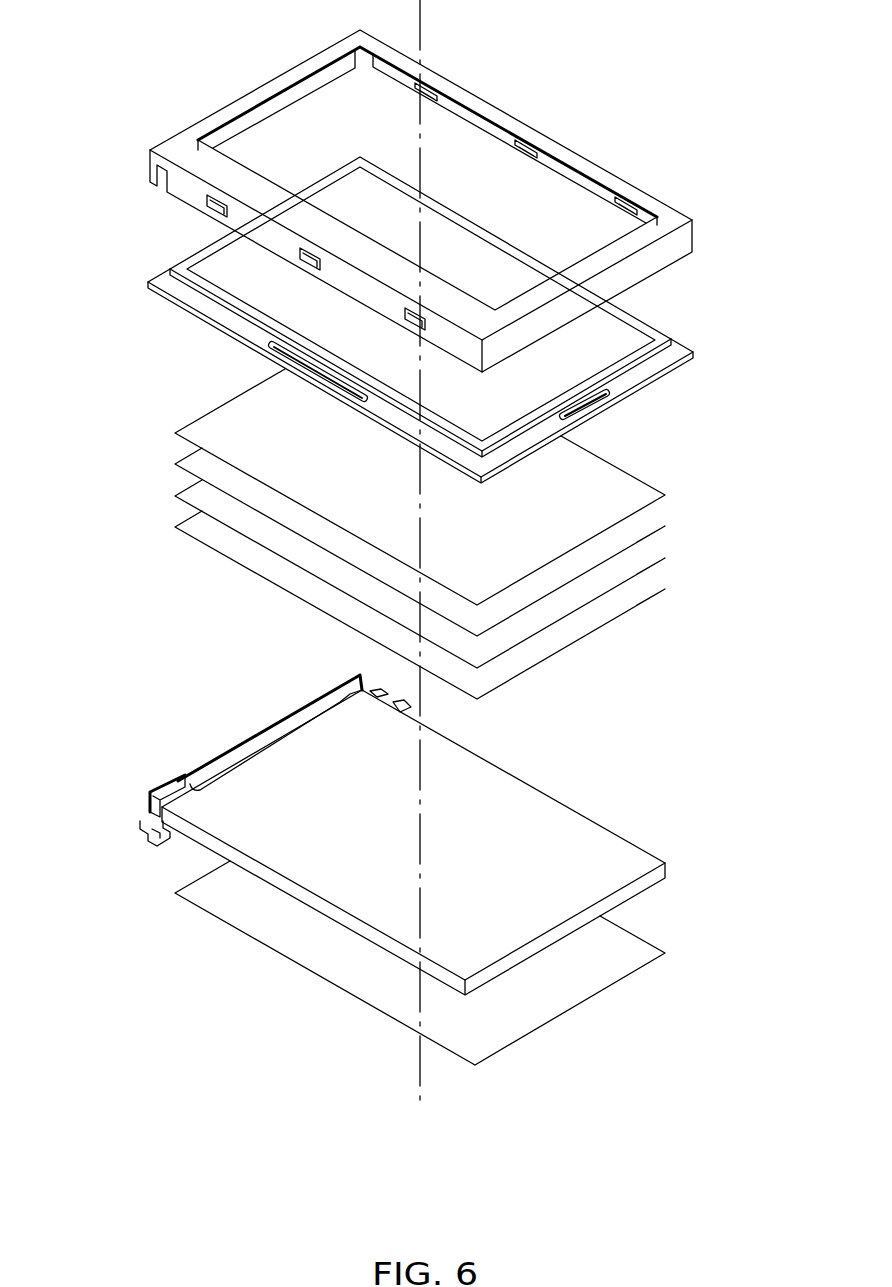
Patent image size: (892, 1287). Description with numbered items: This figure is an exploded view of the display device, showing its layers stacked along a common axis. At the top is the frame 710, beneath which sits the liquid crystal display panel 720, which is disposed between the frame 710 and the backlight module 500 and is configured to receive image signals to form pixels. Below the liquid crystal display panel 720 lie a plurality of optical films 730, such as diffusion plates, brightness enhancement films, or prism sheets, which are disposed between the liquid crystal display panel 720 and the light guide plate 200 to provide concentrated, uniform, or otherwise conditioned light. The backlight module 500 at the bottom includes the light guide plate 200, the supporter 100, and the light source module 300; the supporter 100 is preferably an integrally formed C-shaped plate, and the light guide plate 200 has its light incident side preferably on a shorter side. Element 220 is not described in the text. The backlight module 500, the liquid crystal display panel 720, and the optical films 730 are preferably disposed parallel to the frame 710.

The frame 710 is at (540, 133).
The liquid crystal display panel 720 is at (653, 322).
The optical films 730 is at (675, 480).
The light guide plate 200 is at (558, 818).
The supporter 100 is at (293, 720).
The backlight module 500 is at (164, 771).
The light source module 300 is at (147, 810).
The reflector sheet 220 is at (618, 957).